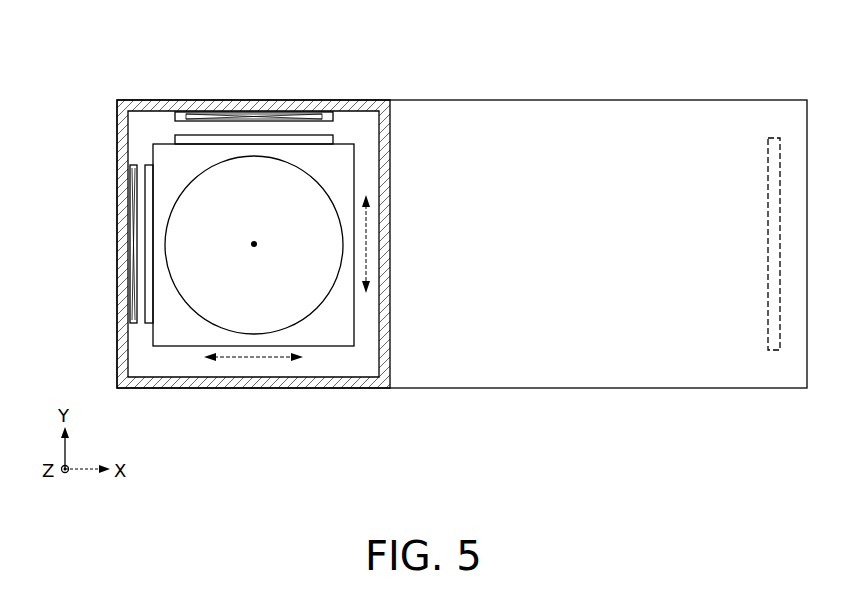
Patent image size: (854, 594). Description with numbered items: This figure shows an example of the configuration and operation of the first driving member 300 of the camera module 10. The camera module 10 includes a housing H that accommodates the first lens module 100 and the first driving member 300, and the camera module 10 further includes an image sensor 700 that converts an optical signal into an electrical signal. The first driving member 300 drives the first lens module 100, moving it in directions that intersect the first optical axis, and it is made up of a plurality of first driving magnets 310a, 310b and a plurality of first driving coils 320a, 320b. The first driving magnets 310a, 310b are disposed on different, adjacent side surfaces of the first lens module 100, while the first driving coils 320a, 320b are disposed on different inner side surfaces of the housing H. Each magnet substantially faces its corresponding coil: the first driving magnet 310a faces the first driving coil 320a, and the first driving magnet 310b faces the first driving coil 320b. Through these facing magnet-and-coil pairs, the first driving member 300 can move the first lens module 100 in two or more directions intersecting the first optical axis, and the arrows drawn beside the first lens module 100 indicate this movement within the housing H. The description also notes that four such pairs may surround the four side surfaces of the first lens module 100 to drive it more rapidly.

The camera module 10 is at (582, 90).
The housing H is at (118, 138).
The first lens module 100 is at (328, 346).
The first driving member 300 is at (590, 412).
The first driving magnet 310a is at (150, 284).
The first driving magnet 310b is at (293, 140).
The first driving coil 320a is at (131, 247).
The first driving coil 320b is at (218, 118).
The image sensor 700 is at (775, 350).